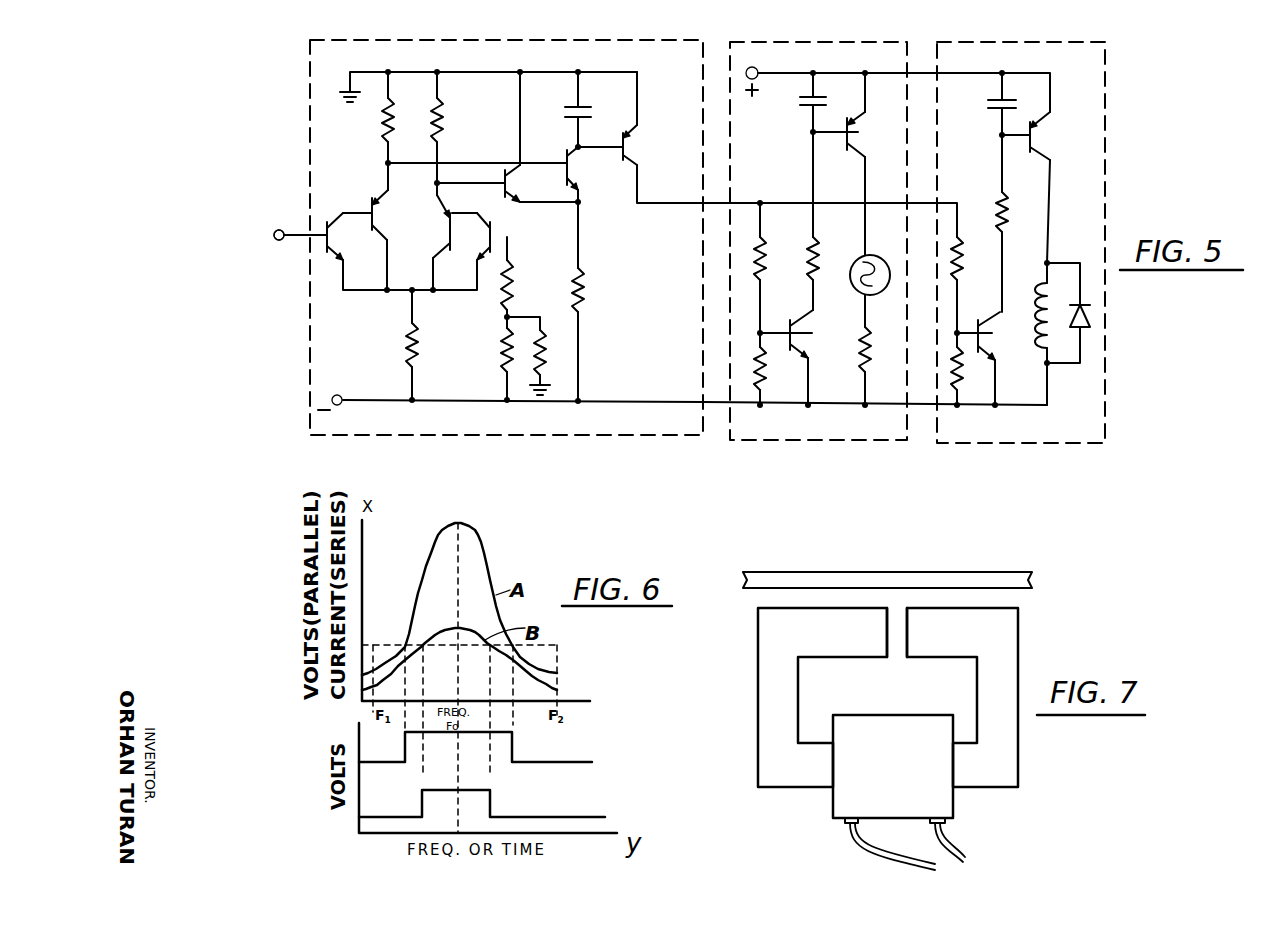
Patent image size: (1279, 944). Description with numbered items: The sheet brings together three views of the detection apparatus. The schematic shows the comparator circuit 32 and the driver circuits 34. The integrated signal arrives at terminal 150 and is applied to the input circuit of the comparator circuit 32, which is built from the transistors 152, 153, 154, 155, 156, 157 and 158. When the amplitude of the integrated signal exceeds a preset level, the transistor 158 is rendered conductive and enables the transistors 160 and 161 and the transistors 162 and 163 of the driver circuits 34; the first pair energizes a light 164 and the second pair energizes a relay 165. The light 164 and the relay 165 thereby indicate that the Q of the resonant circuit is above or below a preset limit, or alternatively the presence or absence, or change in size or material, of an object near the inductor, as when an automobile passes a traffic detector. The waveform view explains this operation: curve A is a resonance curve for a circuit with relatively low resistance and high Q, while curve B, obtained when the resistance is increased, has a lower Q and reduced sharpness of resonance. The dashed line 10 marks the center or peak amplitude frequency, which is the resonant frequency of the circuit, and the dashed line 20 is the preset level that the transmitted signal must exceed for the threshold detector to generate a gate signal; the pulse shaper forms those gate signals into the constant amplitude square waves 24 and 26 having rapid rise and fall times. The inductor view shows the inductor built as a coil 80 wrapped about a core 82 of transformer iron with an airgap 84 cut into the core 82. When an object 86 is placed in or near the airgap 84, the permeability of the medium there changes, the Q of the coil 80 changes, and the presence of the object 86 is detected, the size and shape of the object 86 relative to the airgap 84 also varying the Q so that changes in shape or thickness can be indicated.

In FIG. 5, the comparator circuit 32 is at (307, 118).
In FIG. 5, the driver circuits 34 is at (1107, 143).
In FIG. 5, the terminal 150 is at (274, 242).
In FIG. 5, the transistor 152 is at (325, 225).
In FIG. 5, the transistor 153 is at (370, 199).
In FIG. 5, the transistor 154 is at (448, 213).
In FIG. 5, the transistor 155 is at (493, 233).
In FIG. 5, the transistor 156 is at (532, 183).
In FIG. 5, the transistor 157 is at (575, 180).
In FIG. 5, the transistor 158 is at (627, 143).
In FIG. 5, the transistor 160 is at (822, 334).
In FIG. 5, the transistor 161 is at (878, 134).
In FIG. 5, the transistor 162 is at (1010, 336).
In FIG. 5, the transistor 163 is at (1035, 148).
In FIG. 5, the light 164 is at (860, 258).
In FIG. 5, the relay 165 is at (1040, 295).
In FIG. 6, the dashed line 10 is at (460, 562).
In FIG. 6, the dashed line 20 is at (548, 645).
In FIG. 6, the square wave 24 is at (475, 748).
In FIG. 6, the square wave 26 is at (482, 801).
In FIG. 7, the coil 80 is at (908, 783).
In FIG. 7, the core 82 is at (1018, 638).
In FIG. 7, the airgap 84 is at (893, 645).
In FIG. 7, the object 86 is at (895, 572).